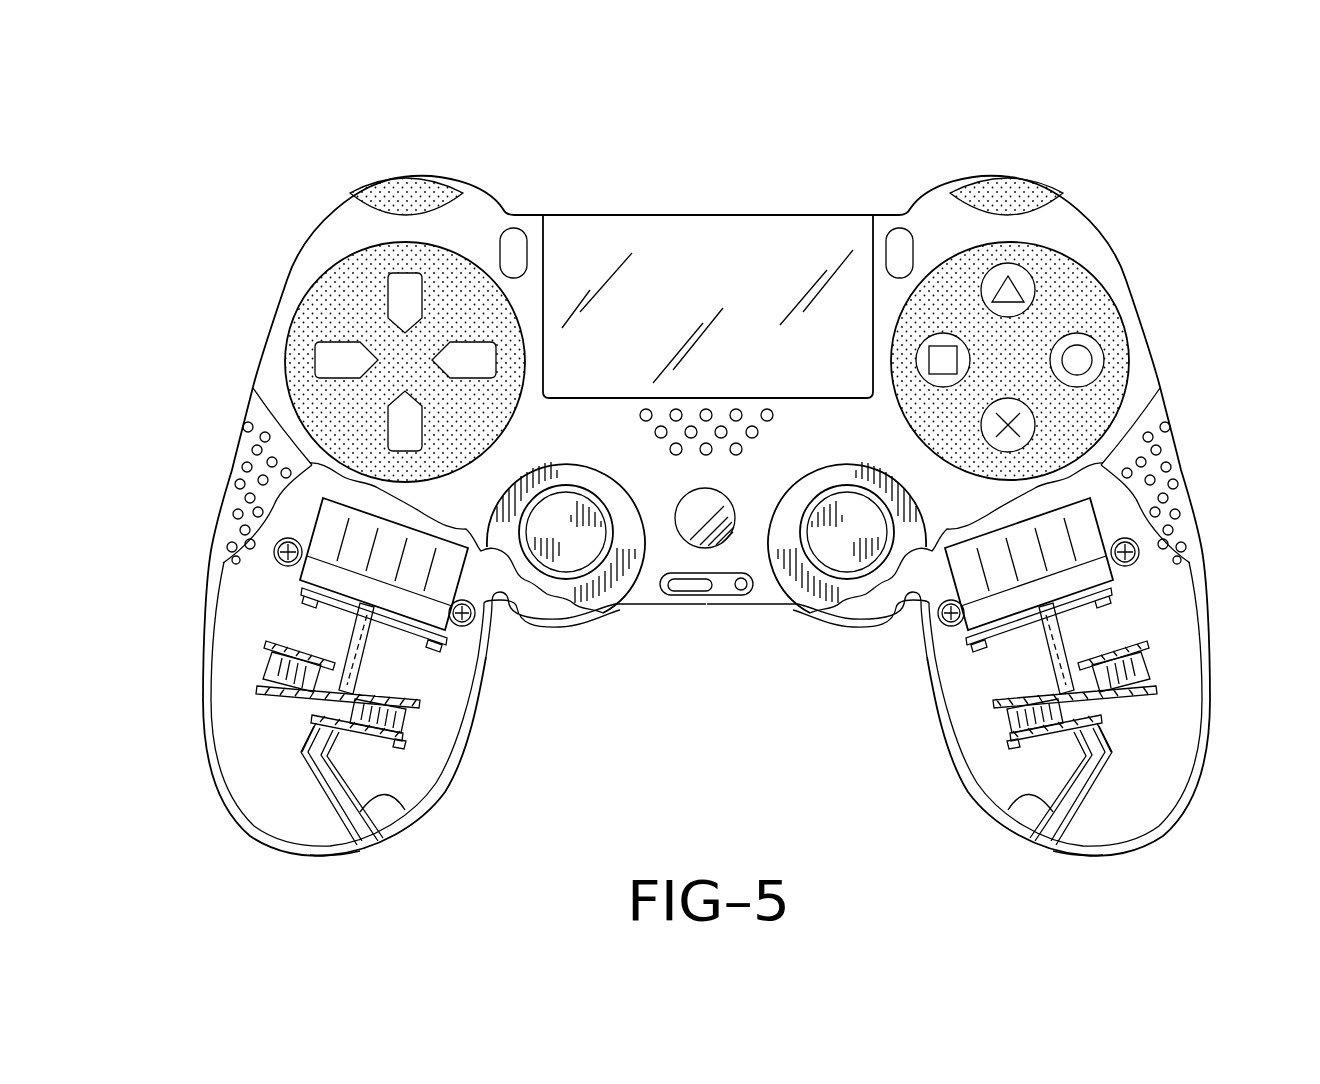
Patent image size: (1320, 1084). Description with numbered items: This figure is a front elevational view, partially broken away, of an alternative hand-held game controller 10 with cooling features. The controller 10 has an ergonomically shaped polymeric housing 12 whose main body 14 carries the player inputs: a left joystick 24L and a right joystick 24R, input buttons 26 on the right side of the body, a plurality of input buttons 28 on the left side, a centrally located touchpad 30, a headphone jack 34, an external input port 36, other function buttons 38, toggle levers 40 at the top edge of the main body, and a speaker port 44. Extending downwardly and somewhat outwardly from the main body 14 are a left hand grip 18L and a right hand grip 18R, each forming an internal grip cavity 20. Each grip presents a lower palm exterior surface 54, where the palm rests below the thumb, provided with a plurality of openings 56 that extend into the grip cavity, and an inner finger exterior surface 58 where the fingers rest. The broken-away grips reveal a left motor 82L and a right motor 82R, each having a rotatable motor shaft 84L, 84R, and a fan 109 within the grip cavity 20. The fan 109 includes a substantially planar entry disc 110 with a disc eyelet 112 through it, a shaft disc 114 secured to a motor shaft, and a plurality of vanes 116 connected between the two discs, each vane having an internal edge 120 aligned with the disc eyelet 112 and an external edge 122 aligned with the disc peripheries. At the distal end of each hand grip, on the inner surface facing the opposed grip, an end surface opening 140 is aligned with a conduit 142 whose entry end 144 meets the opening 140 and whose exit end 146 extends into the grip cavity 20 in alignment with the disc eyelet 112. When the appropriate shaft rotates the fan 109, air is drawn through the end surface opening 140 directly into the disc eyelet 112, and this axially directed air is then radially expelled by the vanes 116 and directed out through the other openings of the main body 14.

The hand-held game controller 10 is at (178, 185).
The housing 12 is at (1168, 353).
The main body 14 is at (887, 215).
The left hand grip 18L is at (497, 665).
The right hand grip 18R is at (916, 665).
The grip cavity 20 is at (445, 688).
The left joystick 24L is at (566, 535).
The right joystick 24R is at (850, 535).
The input buttons 26 is at (1118, 303).
The input buttons 28 is at (298, 305).
The touchpad 30 is at (723, 269).
The headphone jack 34 is at (742, 590).
The external input port 36 is at (676, 586).
The function buttons 38 is at (513, 245).
The toggle levers 40 is at (403, 192).
The speaker port 44 is at (725, 405).
The lower palm exterior surface 54 is at (222, 560).
The openings 56 is at (240, 445).
The inner finger exterior surface 58 is at (495, 635).
The left motor 82L is at (335, 550).
The right motor 82R is at (1065, 540).
The left motor shaft 84L is at (350, 595).
The right motor shaft 84R is at (1063, 592).
The fan 109 is at (420, 728).
The entry disc 110 is at (406, 742).
The disc eyelet 112 is at (312, 729).
The shaft disc 114 is at (390, 700).
The vanes 116 is at (275, 686).
The internal edge 120 is at (333, 668).
The external edge 122 is at (268, 650).
The end surface opening 140 is at (380, 853).
The conduit 142 is at (368, 806).
The entry end 144 is at (340, 855).
The exit end 146 is at (300, 753).